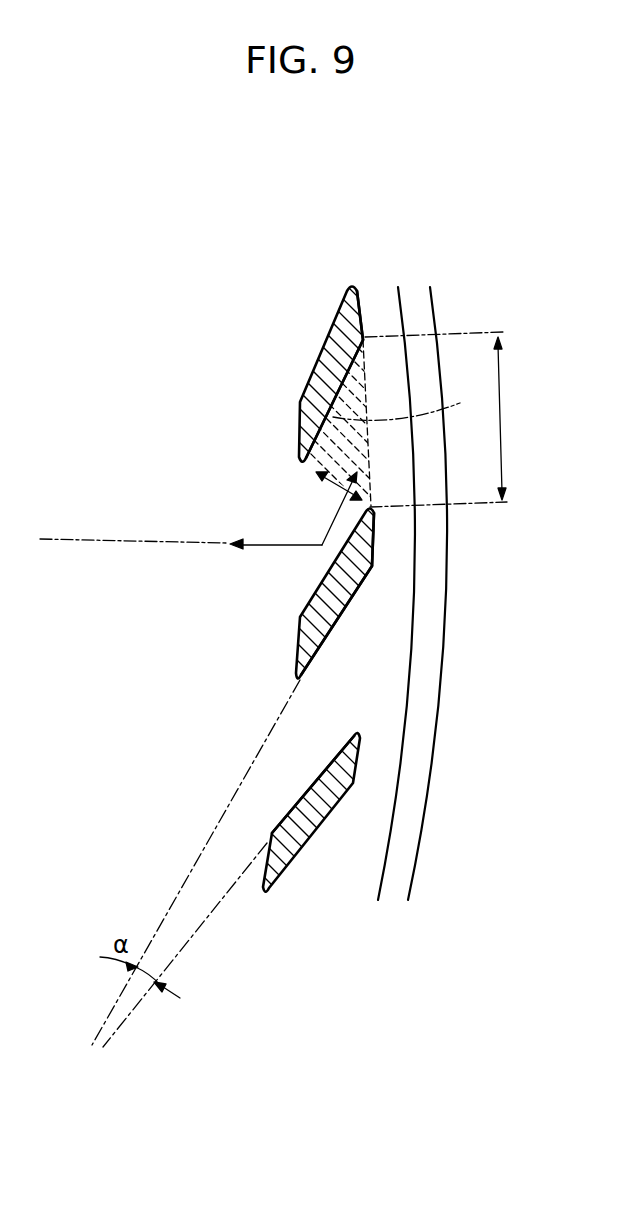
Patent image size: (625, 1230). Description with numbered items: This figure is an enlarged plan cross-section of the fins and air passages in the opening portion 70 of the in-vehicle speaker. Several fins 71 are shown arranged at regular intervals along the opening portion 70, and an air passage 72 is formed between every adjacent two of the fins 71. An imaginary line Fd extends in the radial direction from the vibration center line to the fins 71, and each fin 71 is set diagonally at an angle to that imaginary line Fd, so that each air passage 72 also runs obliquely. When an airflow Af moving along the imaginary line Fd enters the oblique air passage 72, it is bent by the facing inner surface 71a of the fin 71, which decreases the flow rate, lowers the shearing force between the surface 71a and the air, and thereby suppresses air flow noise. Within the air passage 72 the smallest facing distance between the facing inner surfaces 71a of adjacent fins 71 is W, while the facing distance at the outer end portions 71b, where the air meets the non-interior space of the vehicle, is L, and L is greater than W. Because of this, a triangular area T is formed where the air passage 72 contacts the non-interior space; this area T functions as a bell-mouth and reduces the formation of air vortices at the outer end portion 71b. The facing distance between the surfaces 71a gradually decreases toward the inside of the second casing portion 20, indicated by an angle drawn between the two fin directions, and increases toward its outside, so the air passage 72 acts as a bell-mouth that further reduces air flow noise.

The second casing portion 20 is at (412, 221).
The opening portion 70 is at (385, 751).
The fin 71 is at (328, 340).
The facing inner surface 71a is at (340, 398).
The outer end portion 71b is at (365, 340).
The air passage 72 is at (353, 458).
The facing distance at outer end portions L is at (442, 419).
The triangular area T is at (406, 404).
The smallest facing distance W is at (335, 495).
The airflow Af is at (320, 543).
The imaginary line Fd is at (73, 541).